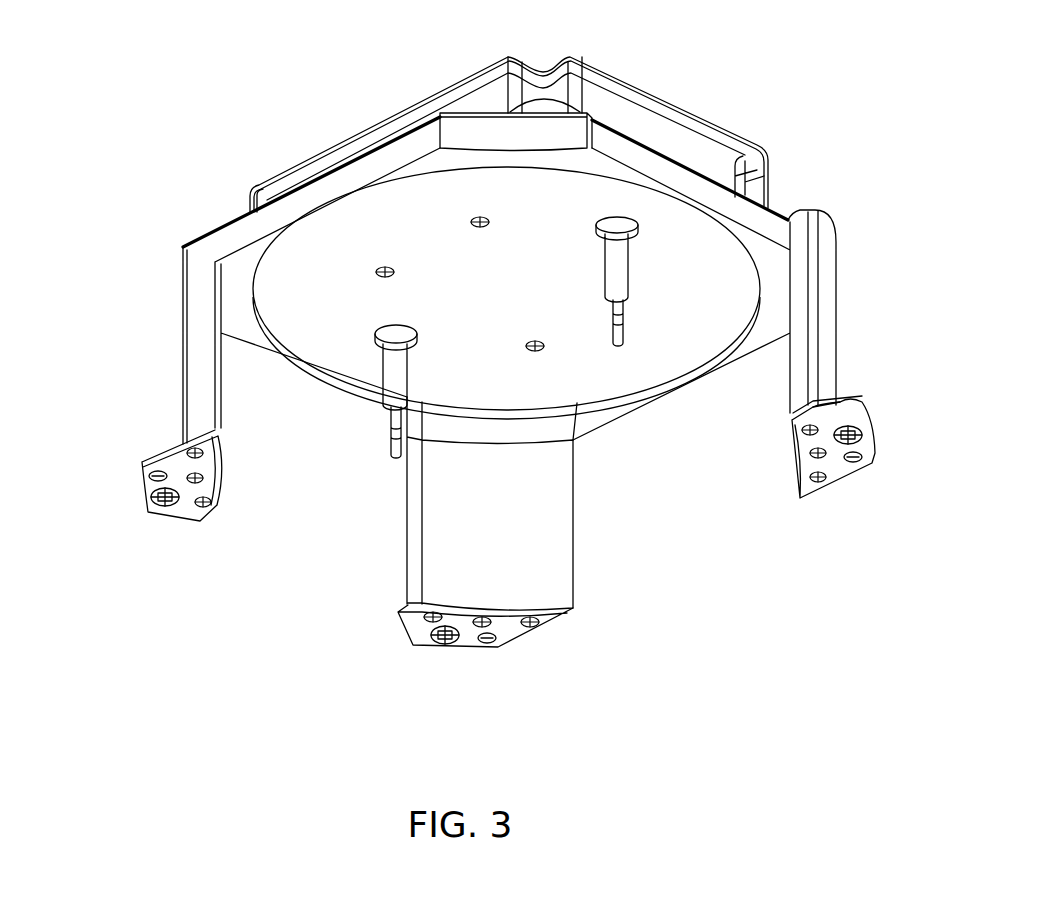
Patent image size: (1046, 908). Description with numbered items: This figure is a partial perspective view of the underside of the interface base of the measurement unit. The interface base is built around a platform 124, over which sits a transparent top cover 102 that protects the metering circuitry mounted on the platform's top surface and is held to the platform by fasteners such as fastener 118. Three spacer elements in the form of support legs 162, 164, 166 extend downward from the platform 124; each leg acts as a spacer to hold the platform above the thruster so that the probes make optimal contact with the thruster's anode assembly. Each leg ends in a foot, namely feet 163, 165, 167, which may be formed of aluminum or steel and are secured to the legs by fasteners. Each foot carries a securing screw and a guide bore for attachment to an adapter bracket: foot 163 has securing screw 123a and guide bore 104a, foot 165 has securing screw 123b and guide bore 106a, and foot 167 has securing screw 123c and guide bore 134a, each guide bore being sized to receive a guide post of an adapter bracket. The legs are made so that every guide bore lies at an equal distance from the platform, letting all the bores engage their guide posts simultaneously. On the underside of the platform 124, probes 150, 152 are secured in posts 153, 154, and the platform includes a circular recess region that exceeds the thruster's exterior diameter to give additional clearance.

The transparent top cover 102 is at (690, 134).
The securing fastener 118 is at (543, 108).
The platform 124 is at (243, 232).
The support leg 162 is at (815, 317).
The support leg 164 is at (195, 334).
The probe 150 is at (388, 420).
The probe 152 is at (640, 298).
The post 153 is at (383, 367).
The post 154 is at (622, 253).
The support leg 166 is at (557, 525).
The foot 167 is at (485, 679).
The foot 165 is at (160, 498).
The foot 163 is at (877, 461).
The securing screw 123a is at (858, 393).
The securing screw 123b is at (163, 500).
The securing screw 123c is at (450, 647).
The guide bore 104a is at (850, 458).
The guide bore 106a is at (158, 478).
The guide bore 134a is at (485, 642).